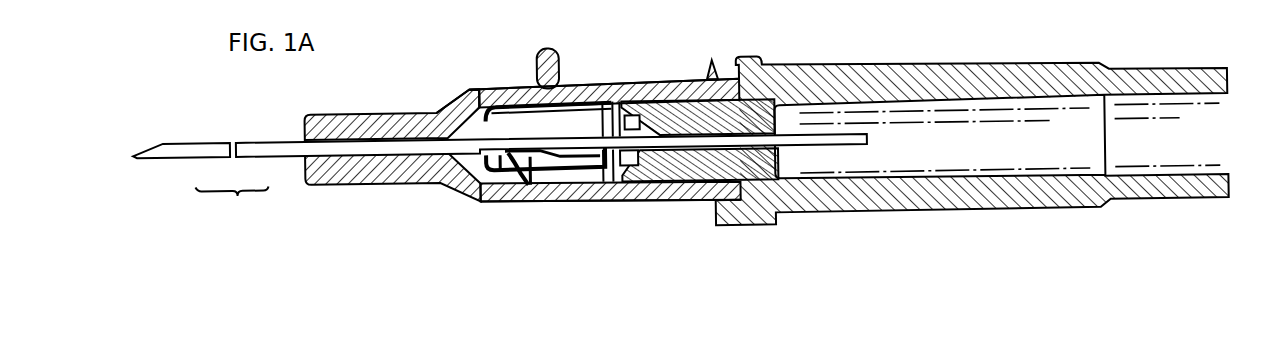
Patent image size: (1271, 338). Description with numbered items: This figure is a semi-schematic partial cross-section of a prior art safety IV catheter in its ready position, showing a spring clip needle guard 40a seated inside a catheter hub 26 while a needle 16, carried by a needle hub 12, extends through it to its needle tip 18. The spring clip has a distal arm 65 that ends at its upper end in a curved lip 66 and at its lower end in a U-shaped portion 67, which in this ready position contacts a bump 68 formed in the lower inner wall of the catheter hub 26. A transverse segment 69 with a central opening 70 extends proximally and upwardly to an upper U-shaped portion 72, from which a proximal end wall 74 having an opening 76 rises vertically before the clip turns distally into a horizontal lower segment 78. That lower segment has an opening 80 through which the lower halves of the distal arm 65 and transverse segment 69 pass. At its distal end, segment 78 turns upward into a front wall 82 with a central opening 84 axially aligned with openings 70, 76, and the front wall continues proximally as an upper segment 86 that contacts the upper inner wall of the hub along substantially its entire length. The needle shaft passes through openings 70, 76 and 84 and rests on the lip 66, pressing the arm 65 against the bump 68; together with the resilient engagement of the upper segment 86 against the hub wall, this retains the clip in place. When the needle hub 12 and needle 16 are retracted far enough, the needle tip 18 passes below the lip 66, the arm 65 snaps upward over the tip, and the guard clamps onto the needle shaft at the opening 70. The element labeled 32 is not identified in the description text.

The needle hub 12 is at (826, 72).
The needle 16 is at (268, 140).
The needle tip 18 is at (140, 151).
The catheter hub 26 is at (677, 211).
The housing top wall 32 is at (683, 85).
The spring clip needle guard 40a is at (578, 207).
The distal arm 65 is at (478, 205).
The curved lip 66 is at (515, 163).
The U-shaped portion 67 is at (512, 208).
The bump 68 is at (530, 208).
The transverse segment 69 is at (594, 88).
The central opening 70 is at (568, 86).
The upper U-shaped portion 72 is at (601, 105).
The proximal end wall 74 is at (636, 210).
The opening 76 is at (656, 88).
The horizontal lower segment 78 is at (605, 209).
The opening 80 is at (563, 209).
The front wall 82 is at (466, 92).
The central opening 84 is at (455, 110).
The upper segment 86 is at (504, 95).